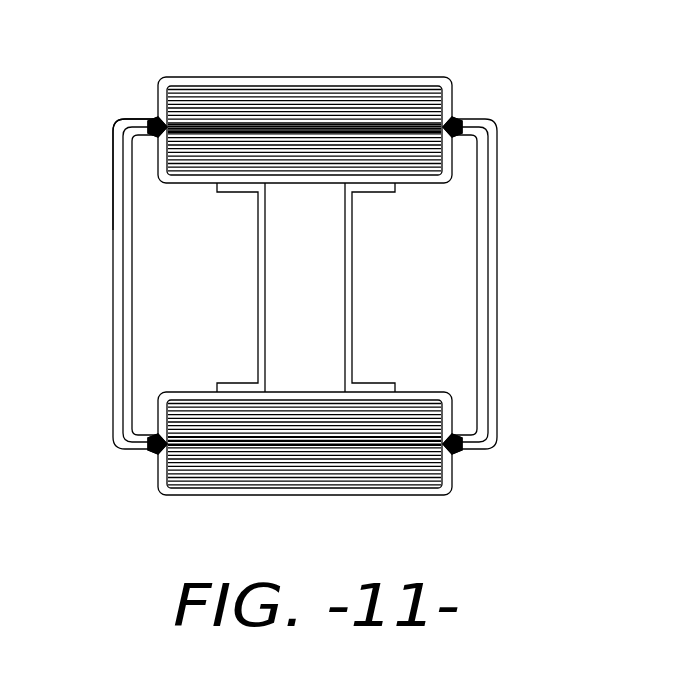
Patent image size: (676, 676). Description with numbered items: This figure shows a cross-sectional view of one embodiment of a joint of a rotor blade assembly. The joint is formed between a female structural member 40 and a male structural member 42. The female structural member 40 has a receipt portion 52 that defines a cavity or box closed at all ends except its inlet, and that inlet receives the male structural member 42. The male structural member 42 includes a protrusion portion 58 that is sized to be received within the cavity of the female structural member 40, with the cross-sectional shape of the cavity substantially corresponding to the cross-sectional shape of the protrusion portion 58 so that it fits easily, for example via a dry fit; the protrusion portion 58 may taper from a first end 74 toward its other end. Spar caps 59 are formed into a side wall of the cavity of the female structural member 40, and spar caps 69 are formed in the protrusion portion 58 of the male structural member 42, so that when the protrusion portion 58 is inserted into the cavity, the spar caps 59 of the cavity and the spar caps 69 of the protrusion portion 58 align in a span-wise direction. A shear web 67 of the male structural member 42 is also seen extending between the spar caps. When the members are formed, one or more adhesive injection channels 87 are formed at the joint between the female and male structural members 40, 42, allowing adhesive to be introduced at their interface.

The female structural member 40 is at (112, 262).
The male structural member 42 is at (122, 318).
The receipt portion 52 is at (117, 207).
The protrusion portion 58 is at (130, 363).
The spar caps 59 is at (226, 108).
The spar caps 69 is at (413, 157).
The shear web 67 is at (320, 312).
The first end 74 is at (146, 126).
The adhesive injection channels 87 is at (155, 118).